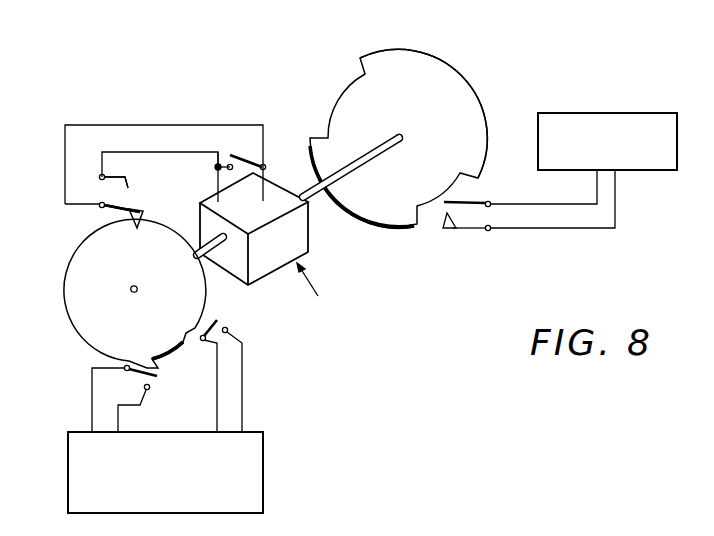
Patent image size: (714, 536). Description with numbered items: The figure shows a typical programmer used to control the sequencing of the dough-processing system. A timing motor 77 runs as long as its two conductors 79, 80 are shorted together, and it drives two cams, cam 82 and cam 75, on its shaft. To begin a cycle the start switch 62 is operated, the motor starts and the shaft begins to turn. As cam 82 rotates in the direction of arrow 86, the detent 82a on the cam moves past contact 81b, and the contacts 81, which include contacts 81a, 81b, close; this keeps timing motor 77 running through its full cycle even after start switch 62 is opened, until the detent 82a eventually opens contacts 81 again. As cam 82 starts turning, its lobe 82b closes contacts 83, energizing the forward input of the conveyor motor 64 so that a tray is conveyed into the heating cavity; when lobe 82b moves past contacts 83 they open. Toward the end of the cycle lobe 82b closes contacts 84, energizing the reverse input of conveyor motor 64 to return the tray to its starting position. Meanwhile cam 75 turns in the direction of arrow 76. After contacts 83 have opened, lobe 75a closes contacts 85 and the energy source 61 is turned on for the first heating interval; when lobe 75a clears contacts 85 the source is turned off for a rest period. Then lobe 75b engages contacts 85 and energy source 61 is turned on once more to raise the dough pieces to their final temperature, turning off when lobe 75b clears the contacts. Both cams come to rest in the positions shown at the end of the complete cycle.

The energy source 61 is at (629, 96).
The start switch 62 is at (241, 157).
The conveyor motor 64 is at (265, 473).
The cam 75 is at (358, 108).
The lobe 75a is at (445, 80).
The lobe 75b is at (366, 213).
The arrow 76 is at (443, 148).
The timing motor 77 is at (270, 273).
The conductor 79 is at (223, 182).
The conductor 80 is at (264, 196).
The contacts 81 is at (120, 199).
The contact 81a is at (130, 196).
The contact 81b is at (118, 212).
The cam 82 is at (92, 303).
The detent 82a is at (132, 223).
The lobe 82b is at (174, 371).
The contacts 83 is at (129, 378).
The contacts 84 is at (219, 343).
The contacts 85 is at (458, 212).
The arrow 86 is at (182, 285).